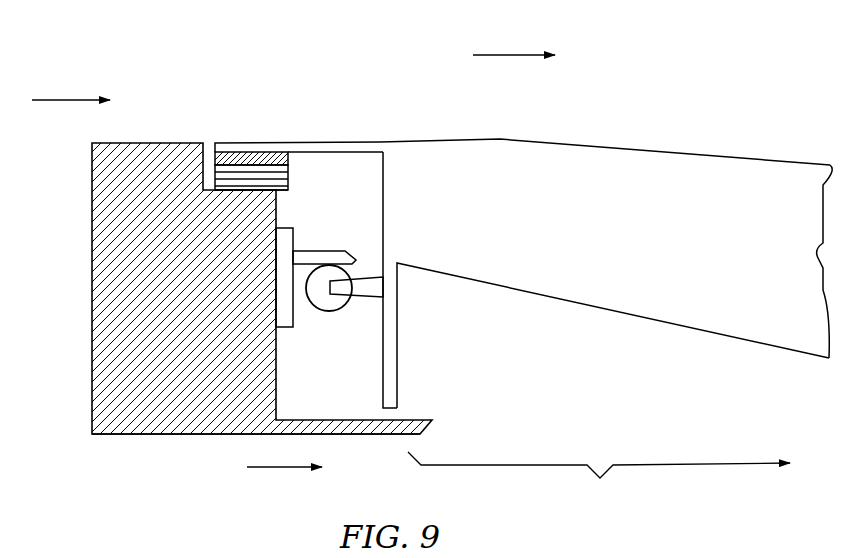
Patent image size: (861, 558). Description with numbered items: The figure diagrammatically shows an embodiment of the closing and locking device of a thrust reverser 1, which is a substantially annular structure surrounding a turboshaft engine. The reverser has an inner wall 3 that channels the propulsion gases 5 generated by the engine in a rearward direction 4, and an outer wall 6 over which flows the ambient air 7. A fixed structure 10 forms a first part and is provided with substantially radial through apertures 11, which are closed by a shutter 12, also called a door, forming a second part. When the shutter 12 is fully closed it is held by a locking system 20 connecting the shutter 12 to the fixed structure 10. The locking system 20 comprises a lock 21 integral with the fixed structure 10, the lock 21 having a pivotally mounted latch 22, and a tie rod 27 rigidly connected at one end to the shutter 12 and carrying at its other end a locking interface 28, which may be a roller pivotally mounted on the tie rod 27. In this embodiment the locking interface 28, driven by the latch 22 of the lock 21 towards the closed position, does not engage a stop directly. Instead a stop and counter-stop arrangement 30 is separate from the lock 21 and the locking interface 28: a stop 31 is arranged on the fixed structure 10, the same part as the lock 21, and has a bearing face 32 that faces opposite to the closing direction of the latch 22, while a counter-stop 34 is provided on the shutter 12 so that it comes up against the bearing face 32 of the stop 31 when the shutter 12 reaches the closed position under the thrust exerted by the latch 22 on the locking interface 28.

The thrust reverser 1 is at (128, 88).
The inner wall 3 is at (150, 437).
The rearward direction 4 is at (512, 57).
The propulsion gases 5 is at (283, 469).
The outer wall 6 is at (165, 143).
The ambient air 7 is at (72, 101).
The fixed structure 10 is at (125, 156).
The through apertures 11 is at (599, 481).
The shutter 12 is at (637, 163).
The locking system 20 is at (330, 168).
The lock 21 is at (283, 277).
The latch 22 is at (338, 252).
The tie rod 27 is at (368, 296).
The locking interface 28 is at (329, 303).
The locking mechanism 30 is at (412, 343).
The stop 31 is at (243, 182).
The bearing face 32 is at (231, 157).
The counter-stop 34 is at (262, 158).